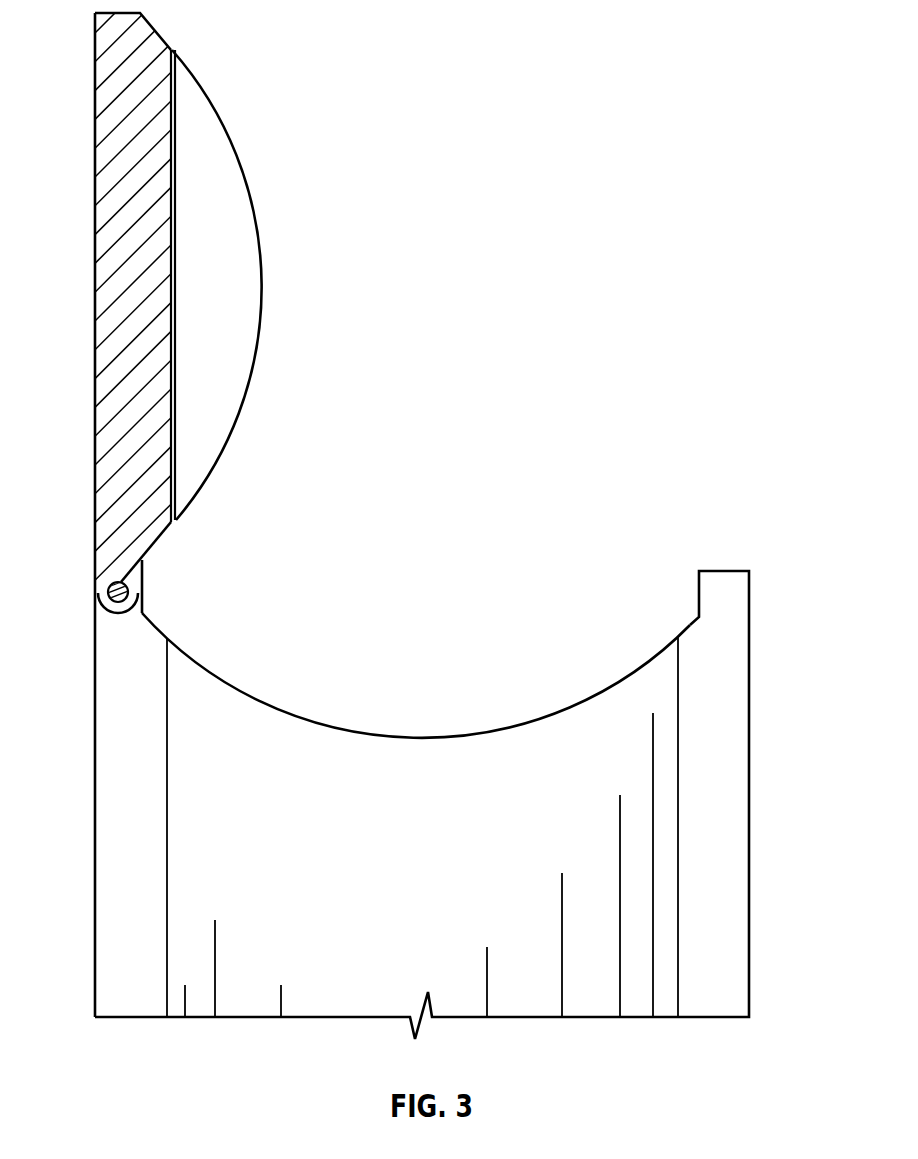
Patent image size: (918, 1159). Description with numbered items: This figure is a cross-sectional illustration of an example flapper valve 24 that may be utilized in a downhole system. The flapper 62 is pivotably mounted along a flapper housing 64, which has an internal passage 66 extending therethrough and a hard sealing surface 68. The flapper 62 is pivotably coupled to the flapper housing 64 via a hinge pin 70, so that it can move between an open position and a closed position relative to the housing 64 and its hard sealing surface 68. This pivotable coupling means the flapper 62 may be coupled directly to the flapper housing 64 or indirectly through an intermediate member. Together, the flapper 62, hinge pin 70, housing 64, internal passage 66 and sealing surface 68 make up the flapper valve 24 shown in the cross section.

The flapper valve 24 is at (686, 280).
The flapper 62 is at (95, 170).
The flapper housing 64 is at (749, 670).
The internal passage 66 is at (459, 842).
The hard sealing surface 68 is at (688, 627).
The hinge pin 70 is at (109, 588).